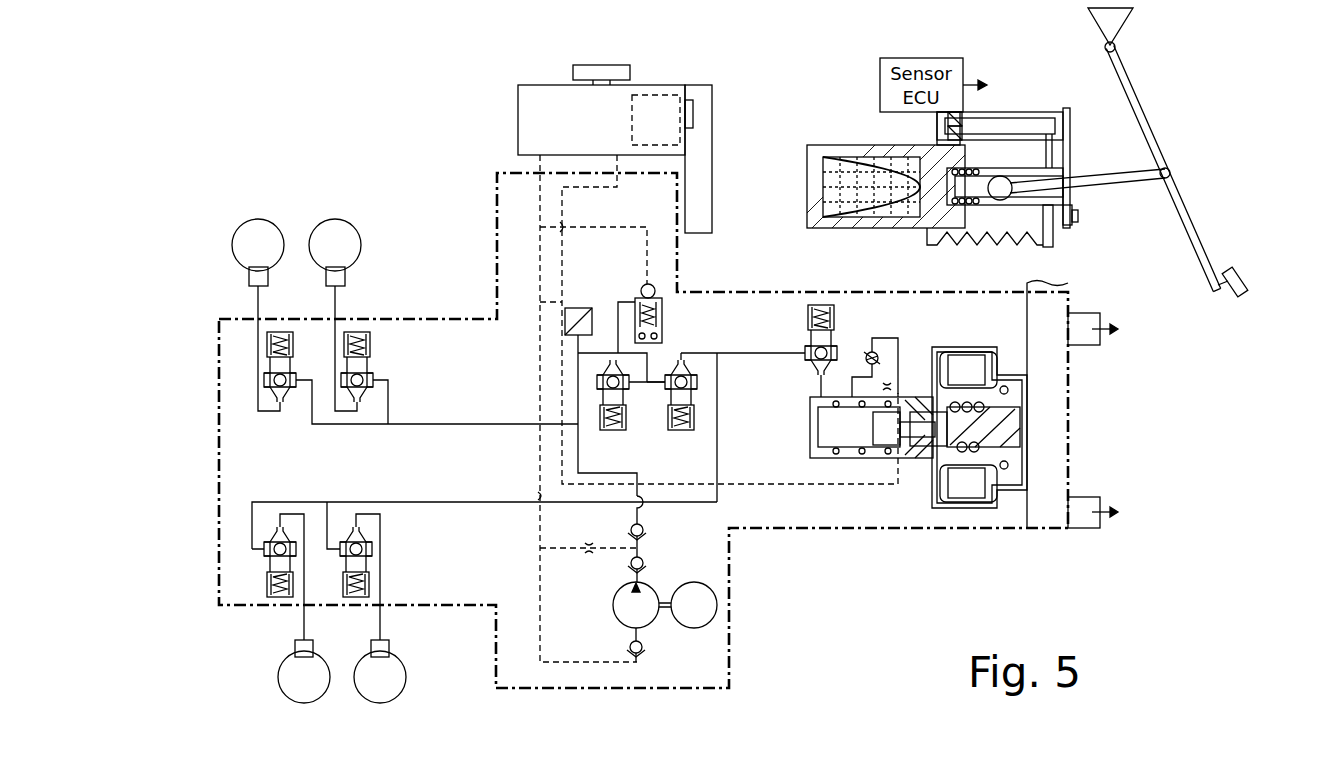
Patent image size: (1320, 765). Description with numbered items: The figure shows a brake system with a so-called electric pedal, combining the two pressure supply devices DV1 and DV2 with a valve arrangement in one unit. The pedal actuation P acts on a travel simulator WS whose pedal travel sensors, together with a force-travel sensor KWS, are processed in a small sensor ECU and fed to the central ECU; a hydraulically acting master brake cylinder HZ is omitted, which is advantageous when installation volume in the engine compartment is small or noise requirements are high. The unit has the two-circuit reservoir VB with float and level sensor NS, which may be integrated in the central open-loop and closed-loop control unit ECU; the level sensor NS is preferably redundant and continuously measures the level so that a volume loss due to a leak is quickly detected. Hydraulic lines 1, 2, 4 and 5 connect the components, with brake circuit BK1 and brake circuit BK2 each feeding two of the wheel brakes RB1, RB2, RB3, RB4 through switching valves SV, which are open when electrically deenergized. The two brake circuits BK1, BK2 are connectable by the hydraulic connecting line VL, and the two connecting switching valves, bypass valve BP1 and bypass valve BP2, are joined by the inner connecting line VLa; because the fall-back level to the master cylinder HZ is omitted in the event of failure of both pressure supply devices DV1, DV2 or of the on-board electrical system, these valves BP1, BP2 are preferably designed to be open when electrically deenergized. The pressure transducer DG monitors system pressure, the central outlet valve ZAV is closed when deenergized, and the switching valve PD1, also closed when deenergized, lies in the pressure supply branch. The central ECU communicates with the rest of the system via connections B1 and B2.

The wheel brake RB1 is at (312, 690).
The wheel brake RB2 is at (373, 692).
The wheel brake RB3 is at (262, 243).
The wheel brake RB4 is at (323, 234).
The switching valve SV is at (343, 345).
The brake circuit 1 BK1 is at (484, 509).
The brake circuit 2 BK2 is at (437, 432).
The hydraulic line 4 is at (423, 500).
The hydraulic line 5 is at (455, 421).
The reservoir VB is at (553, 84).
The level sensor NS is at (692, 115).
The electrical control unit ECU is at (700, 207).
The pressure transducer DG is at (601, 387).
The central outlet valve ZAV is at (640, 285).
The bypass valve 1 BP1 is at (678, 408).
The bypass valve 2 BP2 is at (626, 412).
The inner connecting line VLa is at (657, 377).
The hydraulic connecting line VL is at (712, 352).
The hydraulic line 1 is at (750, 358).
The switching valve PD1 is at (812, 345).
The hydraulic line 2 is at (639, 513).
The pressure supply device DV2 is at (690, 627).
The pressure supply device DV1 is at (933, 508).
The element central ECU is at (1053, 430).
The bus connection 1 B1 is at (1111, 329).
The bus connection 2 B2 is at (1111, 512).
The travel simulator WS is at (868, 200).
The master cylinder HZ is at (1010, 208).
The force-travel measuring element KWS is at (1000, 172).
The pedal actuation P is at (1170, 173).